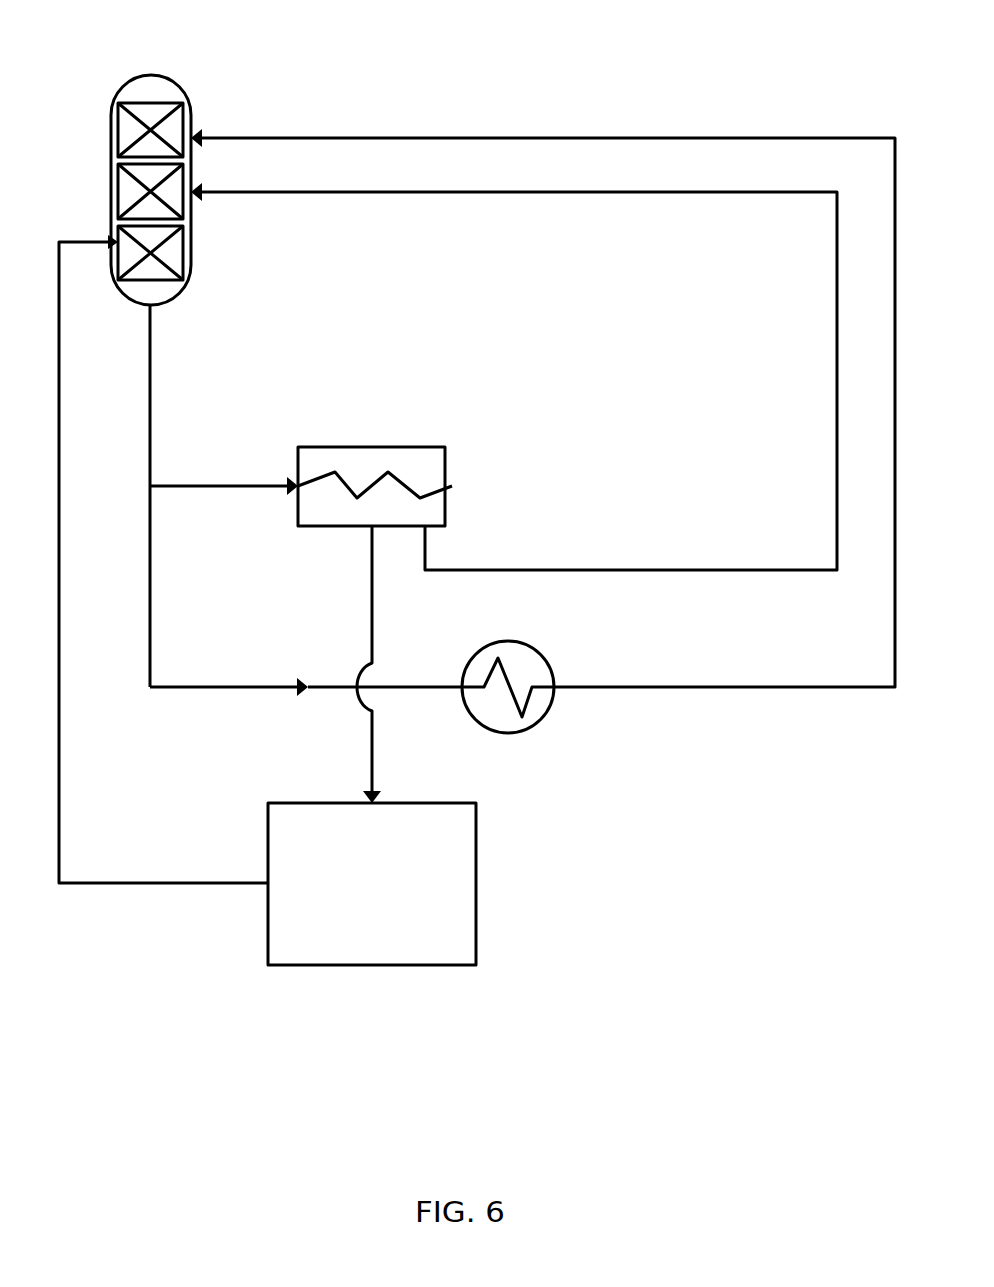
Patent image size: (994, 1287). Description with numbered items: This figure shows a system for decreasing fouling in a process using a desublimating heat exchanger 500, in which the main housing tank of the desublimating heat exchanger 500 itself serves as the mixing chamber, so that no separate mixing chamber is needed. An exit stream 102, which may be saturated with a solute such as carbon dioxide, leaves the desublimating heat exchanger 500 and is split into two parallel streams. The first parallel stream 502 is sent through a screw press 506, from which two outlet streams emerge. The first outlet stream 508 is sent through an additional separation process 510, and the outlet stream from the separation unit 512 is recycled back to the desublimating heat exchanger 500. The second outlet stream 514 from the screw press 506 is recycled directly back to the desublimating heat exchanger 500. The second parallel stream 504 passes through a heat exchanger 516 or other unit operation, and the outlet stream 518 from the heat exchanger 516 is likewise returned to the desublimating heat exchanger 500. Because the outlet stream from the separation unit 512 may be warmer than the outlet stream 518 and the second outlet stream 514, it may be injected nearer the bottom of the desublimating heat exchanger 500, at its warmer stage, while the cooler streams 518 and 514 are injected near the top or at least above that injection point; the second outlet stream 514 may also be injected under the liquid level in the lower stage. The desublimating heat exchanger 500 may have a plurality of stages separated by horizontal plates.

The desublimating heat exchanger 500 is at (177, 83).
The exit stream 102 is at (150, 381).
The first parallel stream 502 is at (214, 486).
The screw press 506 is at (358, 447).
The first outlet stream 508 is at (372, 612).
The second outlet stream 514 is at (697, 570).
The second parallel stream 504 is at (198, 687).
The heat exchanger 516 is at (508, 641).
The outlet stream from the heat exchanger 518 is at (680, 687).
The separation process 510 is at (396, 899).
The outlet stream from the separation unit 512 is at (166, 883).